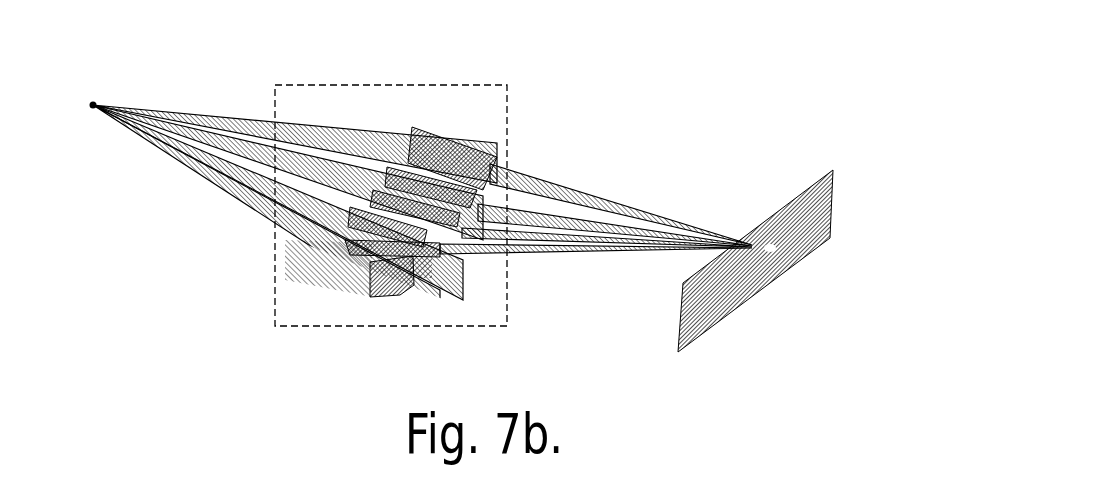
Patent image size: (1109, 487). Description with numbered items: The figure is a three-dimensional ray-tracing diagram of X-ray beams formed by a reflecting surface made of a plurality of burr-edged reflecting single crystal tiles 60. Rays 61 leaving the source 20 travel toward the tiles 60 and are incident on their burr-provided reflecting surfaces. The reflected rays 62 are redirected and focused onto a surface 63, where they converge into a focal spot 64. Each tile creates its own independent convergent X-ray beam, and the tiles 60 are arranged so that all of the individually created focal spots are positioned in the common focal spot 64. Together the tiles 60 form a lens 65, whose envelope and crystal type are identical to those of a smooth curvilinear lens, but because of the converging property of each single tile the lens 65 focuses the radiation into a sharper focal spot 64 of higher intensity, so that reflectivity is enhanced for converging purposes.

The source 20 is at (95, 103).
The tiles 60 is at (352, 282).
The rays 61 is at (258, 200).
The reflected rays 62 is at (612, 255).
The surface 63 is at (835, 172).
The focal spot 64 is at (772, 256).
The lens 65 is at (428, 86).